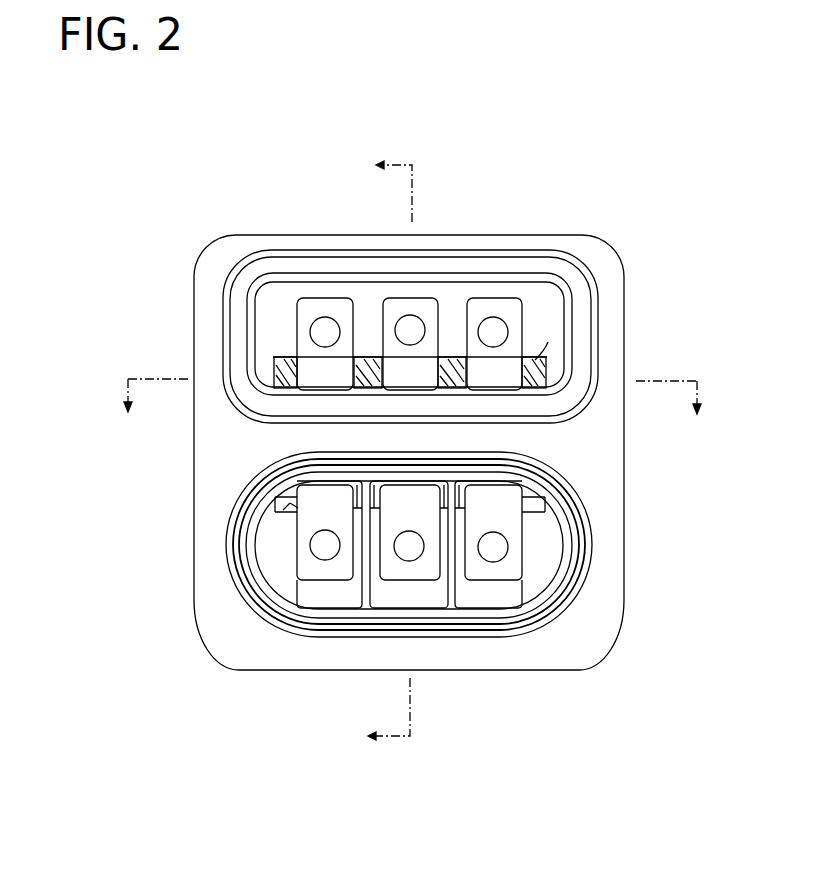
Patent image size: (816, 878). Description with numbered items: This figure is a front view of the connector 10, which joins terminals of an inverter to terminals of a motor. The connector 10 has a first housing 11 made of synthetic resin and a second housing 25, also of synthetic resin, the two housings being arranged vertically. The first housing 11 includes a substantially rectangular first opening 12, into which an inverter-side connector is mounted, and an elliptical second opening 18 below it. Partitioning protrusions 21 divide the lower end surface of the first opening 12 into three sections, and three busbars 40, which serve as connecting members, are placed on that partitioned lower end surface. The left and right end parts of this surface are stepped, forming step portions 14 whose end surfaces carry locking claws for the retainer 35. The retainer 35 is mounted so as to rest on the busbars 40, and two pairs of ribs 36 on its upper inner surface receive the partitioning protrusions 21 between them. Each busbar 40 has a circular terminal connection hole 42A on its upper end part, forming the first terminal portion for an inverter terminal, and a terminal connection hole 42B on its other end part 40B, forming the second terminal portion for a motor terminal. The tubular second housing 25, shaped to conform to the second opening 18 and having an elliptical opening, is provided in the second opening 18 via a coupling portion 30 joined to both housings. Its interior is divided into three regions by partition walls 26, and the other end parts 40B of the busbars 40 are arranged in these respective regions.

The connector 10 is at (469, 146).
The first housing 11 is at (603, 252).
The first opening 12 is at (539, 282).
The step portions 14 is at (267, 367).
The second opening 18 is at (553, 537).
The partitioning protrusions 21 is at (377, 387).
The second housing 25 is at (553, 595).
The partition walls 26 is at (372, 585).
The coupling portion 30 is at (468, 454).
The retainer 35 is at (548, 342).
The ribs 36 is at (420, 423).
The busbars 40 is at (310, 296).
The other end part of the busbar 40B is at (337, 587).
The terminal connection hole 42A is at (399, 320).
The terminal connection hole 42B is at (320, 558).